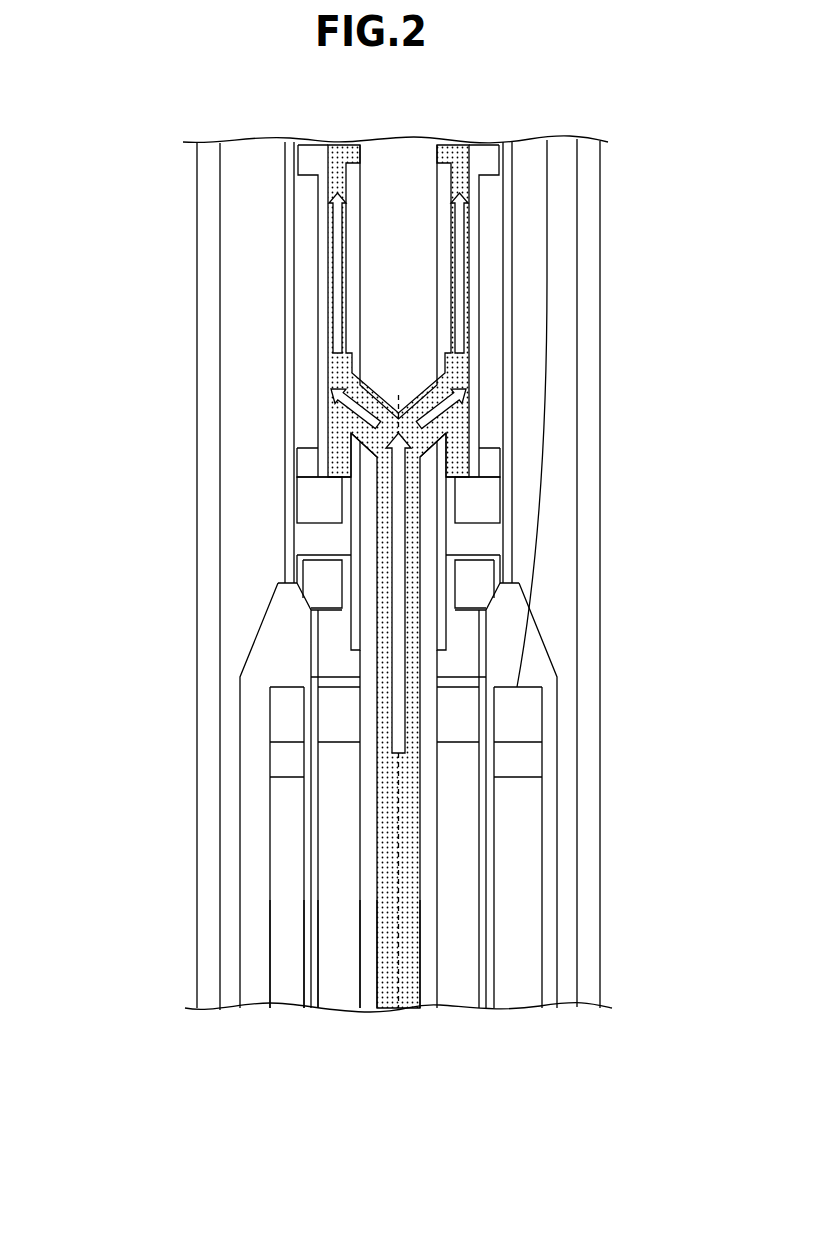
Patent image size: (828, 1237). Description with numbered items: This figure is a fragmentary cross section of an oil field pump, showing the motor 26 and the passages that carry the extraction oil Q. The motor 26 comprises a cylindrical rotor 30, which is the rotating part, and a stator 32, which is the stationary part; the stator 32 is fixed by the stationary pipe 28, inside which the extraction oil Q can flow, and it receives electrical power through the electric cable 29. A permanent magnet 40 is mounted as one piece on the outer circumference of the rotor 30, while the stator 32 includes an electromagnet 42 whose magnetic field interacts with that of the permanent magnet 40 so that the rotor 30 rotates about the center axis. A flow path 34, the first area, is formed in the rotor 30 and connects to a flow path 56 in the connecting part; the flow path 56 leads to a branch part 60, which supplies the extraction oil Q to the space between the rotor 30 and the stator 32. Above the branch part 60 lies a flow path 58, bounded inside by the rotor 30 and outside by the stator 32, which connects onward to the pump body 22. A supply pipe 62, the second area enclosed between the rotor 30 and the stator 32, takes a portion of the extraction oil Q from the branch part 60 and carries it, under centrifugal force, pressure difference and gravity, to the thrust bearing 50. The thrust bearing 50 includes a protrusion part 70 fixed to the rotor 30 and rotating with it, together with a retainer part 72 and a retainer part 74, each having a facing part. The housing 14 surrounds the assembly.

The housing 14 is at (205, 204).
The pump body 22 is at (386, 158).
The motor 26 is at (140, 873).
The stationary pipe 28 is at (513, 371).
The electric cable 29 is at (547, 410).
The rotor 30 is at (367, 954).
The stator 32 is at (270, 892).
The flow path 34 is at (386, 1007).
The permanent magnet 40 is at (337, 997).
The electromagnet 42 is at (287, 997).
The thrust bearing 50 is at (140, 420).
The flow path 56 is at (387, 482).
The flow path 58 is at (330, 362).
The branch part 60 is at (376, 402).
The supply pipe 62 is at (362, 435).
The protrusion part 70 is at (307, 542).
The retainer part 72 is at (307, 572).
The retainer part 74 is at (313, 492).
The extraction oil Q is at (452, 403).